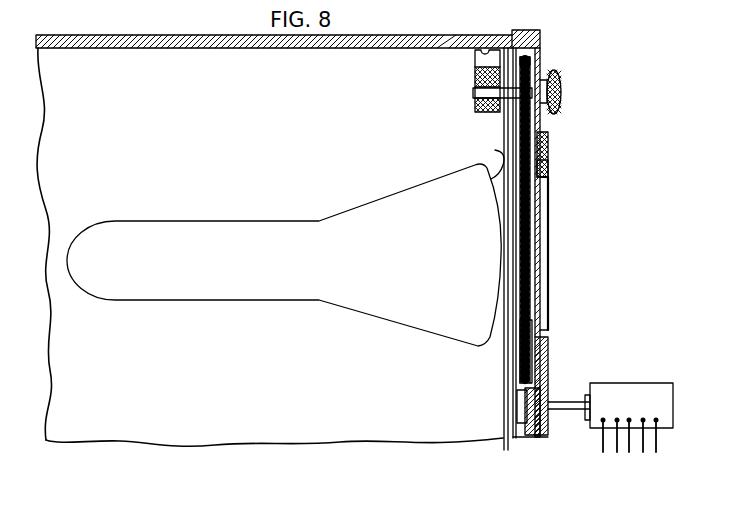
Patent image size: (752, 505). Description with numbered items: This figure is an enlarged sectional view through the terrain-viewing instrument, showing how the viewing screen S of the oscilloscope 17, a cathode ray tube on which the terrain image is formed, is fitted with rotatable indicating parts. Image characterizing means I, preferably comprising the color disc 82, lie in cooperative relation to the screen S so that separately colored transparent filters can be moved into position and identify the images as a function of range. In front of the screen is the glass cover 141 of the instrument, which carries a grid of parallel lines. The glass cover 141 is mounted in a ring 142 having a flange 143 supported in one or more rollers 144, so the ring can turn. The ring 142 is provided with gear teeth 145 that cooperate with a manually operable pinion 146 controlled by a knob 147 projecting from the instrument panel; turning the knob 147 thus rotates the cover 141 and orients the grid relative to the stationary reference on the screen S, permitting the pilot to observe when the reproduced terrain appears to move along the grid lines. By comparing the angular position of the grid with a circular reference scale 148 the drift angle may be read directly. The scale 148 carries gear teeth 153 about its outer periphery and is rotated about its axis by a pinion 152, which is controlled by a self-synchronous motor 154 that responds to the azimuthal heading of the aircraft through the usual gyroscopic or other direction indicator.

The oscilloscope 17 is at (385, 210).
The color disc 82 is at (507, 123).
The glass cover 141 is at (528, 193).
The ring 142 is at (540, 133).
The flange 143 is at (547, 167).
The rollers 144 is at (518, 399).
The gear teeth 145 is at (530, 125).
The pinion 146 is at (528, 62).
The knob 147 is at (557, 75).
The circular reference scale 148 is at (540, 344).
The pinion 152 is at (541, 427).
The gear teeth 153 is at (540, 353).
The self-synchronous motor 154 is at (640, 390).
The screen S is at (494, 158).
The image characterizing means I is at (508, 252).